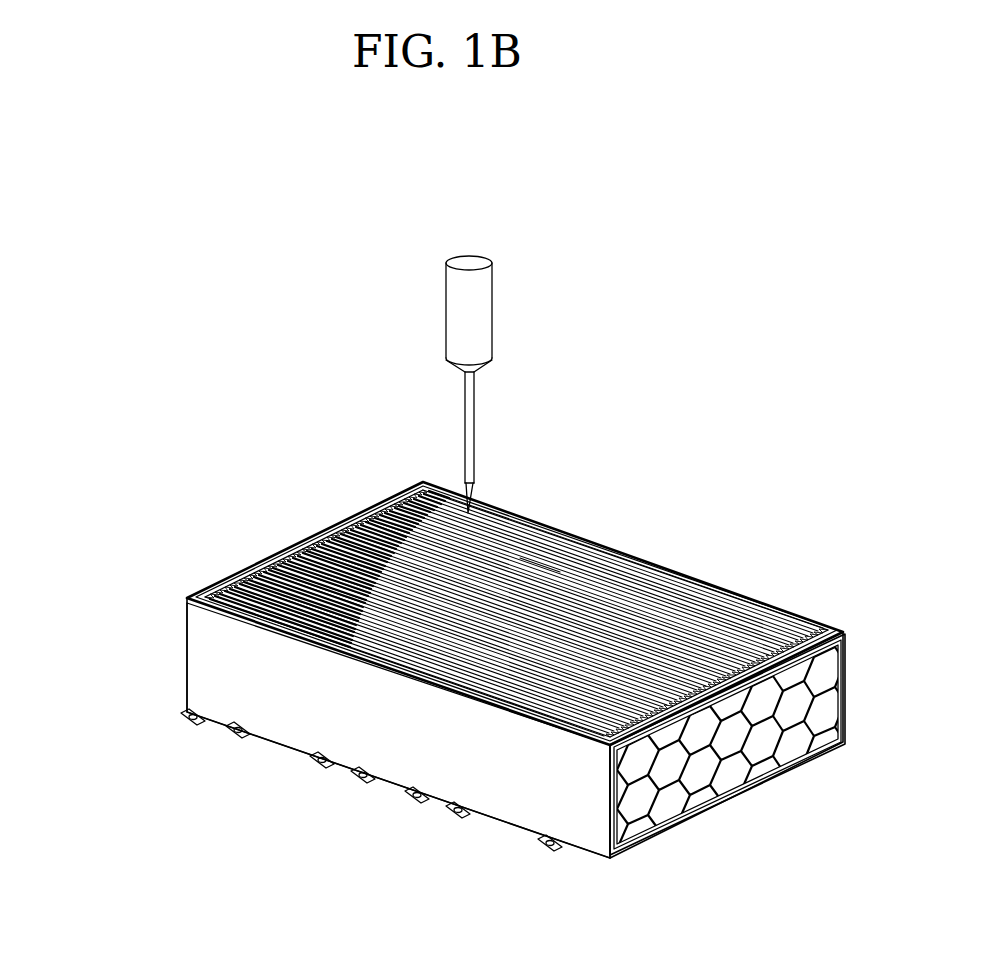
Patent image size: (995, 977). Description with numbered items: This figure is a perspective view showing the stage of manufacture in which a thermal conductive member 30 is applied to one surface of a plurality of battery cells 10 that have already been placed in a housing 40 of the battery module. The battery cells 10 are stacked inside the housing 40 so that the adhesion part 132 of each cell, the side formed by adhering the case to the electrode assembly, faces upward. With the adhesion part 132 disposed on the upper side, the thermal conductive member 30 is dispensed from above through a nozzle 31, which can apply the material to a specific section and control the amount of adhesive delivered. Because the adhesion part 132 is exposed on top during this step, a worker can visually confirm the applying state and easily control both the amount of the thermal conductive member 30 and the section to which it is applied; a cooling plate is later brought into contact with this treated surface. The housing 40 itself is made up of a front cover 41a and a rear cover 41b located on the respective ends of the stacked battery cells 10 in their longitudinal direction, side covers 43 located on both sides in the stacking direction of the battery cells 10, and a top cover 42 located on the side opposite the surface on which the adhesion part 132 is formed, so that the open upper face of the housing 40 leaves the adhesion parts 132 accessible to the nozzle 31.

The battery cell 10 is at (665, 600).
The thermal conductive member 30 is at (373, 525).
The nozzle 31 is at (467, 262).
The adhesion part 132 is at (540, 554).
The housing 40 is at (146, 657).
The front cover 41a is at (308, 718).
The rear cover 41b is at (800, 618).
The top cover 42 is at (507, 832).
The side cover 43 is at (248, 565).